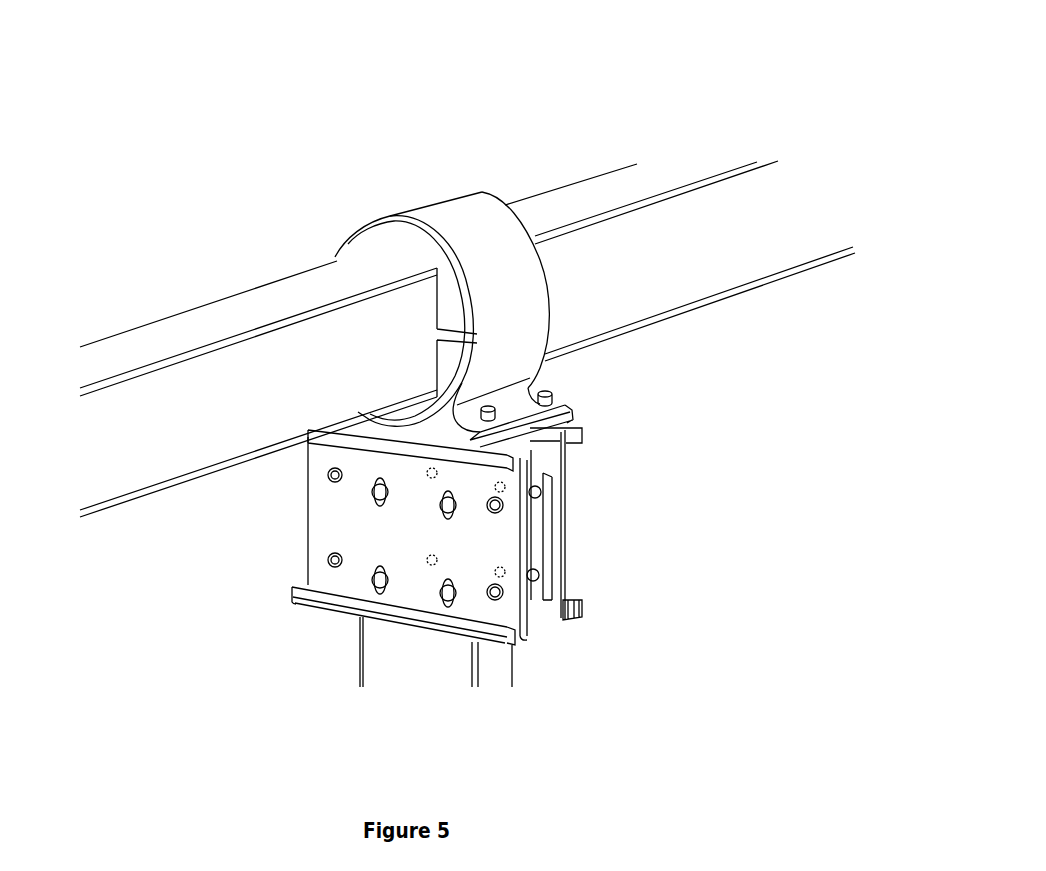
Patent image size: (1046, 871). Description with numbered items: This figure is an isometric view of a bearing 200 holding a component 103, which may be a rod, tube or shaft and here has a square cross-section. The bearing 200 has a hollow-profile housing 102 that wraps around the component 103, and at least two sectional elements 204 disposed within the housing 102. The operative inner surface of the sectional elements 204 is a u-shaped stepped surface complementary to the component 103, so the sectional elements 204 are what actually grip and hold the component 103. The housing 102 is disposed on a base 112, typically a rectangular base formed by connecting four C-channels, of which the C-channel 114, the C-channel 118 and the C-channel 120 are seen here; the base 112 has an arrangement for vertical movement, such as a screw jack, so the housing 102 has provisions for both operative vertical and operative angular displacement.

The bearing 200 is at (748, 82).
The housing 102 is at (443, 222).
The sectional elements 204 is at (377, 237).
The component 103 is at (255, 453).
The C-channel 114 is at (357, 617).
The C-channel 118 is at (547, 543).
The C-channel 120 is at (587, 610).
The base 112 is at (435, 645).